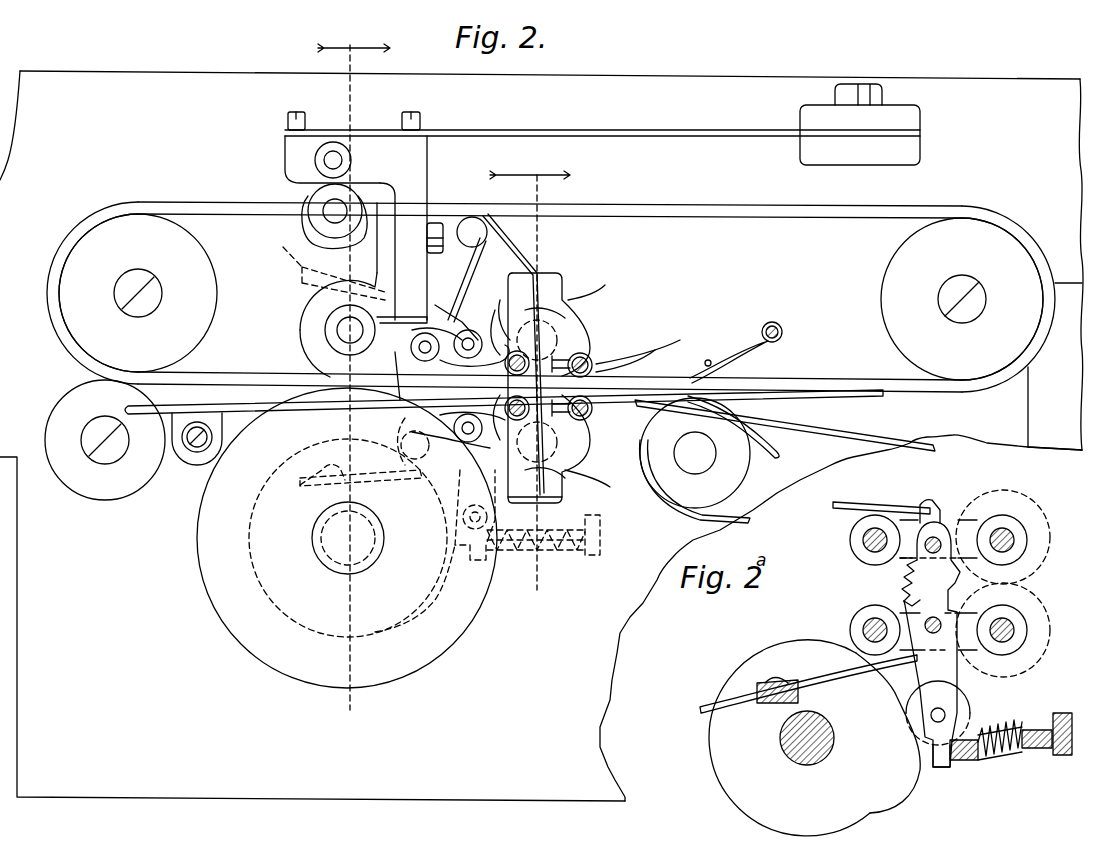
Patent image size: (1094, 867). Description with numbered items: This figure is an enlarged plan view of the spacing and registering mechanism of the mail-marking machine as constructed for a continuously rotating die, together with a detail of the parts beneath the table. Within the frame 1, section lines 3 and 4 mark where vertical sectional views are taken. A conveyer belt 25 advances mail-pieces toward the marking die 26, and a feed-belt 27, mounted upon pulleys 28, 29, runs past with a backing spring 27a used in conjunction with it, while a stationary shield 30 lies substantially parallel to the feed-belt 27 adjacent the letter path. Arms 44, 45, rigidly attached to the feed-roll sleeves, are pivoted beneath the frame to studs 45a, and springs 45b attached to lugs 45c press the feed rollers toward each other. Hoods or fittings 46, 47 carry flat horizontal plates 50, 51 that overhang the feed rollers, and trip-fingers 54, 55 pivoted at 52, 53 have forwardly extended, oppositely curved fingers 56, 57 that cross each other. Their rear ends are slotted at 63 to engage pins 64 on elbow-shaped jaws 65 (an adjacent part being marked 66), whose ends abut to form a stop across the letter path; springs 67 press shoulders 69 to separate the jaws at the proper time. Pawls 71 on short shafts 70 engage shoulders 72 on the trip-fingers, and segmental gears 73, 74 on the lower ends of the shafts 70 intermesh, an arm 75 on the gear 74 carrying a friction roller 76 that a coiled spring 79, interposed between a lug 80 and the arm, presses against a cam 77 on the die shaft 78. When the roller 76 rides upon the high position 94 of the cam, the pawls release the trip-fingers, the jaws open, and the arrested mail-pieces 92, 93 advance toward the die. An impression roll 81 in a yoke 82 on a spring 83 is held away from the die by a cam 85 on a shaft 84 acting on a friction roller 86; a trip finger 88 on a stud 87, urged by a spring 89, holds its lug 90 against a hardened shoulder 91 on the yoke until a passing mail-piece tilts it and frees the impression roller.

In FIG. 2, the frame 1 is at (686, 76).
In FIG. 2, the section line 3 is at (354, 365).
In FIG. 2, the section line 4 is at (530, 368).
In FIG. 2, the conveyer belt 25 is at (1060, 450).
In FIG. 2, the marking die 26 is at (462, 650).
In FIG. 2, the feed-belt 27 is at (703, 214).
In FIG. 2, the backing spring 27a is at (688, 370).
In FIG. 2, the pulley 28 is at (880, 308).
In FIG. 2, the pulley 29 is at (138, 293).
In FIG. 2, the stationary shield 30 is at (268, 410).
In FIG. 2A, the arm 44 is at (938, 510).
In FIG. 2A, the arm 45 is at (985, 665).
In FIG. 2A, the studs 45a is at (866, 625).
In FIG. 2, the springs 45b is at (361, 372).
In FIG. 2A, the springs 45b is at (822, 690).
In FIG. 2, the lugs 45c is at (301, 387).
In FIG. 2A, the lugs 45c is at (757, 700).
In FIG. 2, the hood or fitting 46 is at (550, 376).
In FIG. 2, the hood or fitting 47 is at (549, 505).
In FIG. 2, the flat horizontal plate 50 is at (560, 305).
In FIG. 2, the flat horizontal plate 51 is at (565, 472).
In FIG. 2, the pivot 52 is at (532, 360).
In FIG. 2, the pivot 53 is at (542, 442).
In FIG. 2, the trip-finger 54 is at (537, 334).
In FIG. 2, the trip-finger 55 is at (590, 420).
In FIG. 2, the curved finger 56 is at (460, 356).
In FIG. 2, the curved finger 57 is at (458, 422).
In FIG. 2, the slot 63 is at (594, 358).
In FIG. 2, the pin 64 is at (580, 352).
In FIG. 2, the jaw 65 is at (625, 363).
In FIG. 2, the guide finger 66 is at (638, 348).
In FIG. 2, the spring 67 is at (594, 386).
In FIG. 2, the shoulder 69 is at (491, 403).
In FIG. 2, the short shaft 70 is at (466, 330).
In FIG. 2A, the short shaft 70 is at (945, 535).
In FIG. 2, the pawl 71 is at (501, 354).
In FIG. 2, the shoulder 72 is at (466, 387).
In FIG. 2, the segmental gear 73 is at (397, 440).
In FIG. 2A, the segmental gear 73 is at (905, 565).
In FIG. 2, the segmental gear 74 is at (419, 445).
In FIG. 2A, the segmental gear 74 is at (905, 600).
In FIG. 2, the arm 75 is at (488, 585).
In FIG. 2A, the arm 75 is at (948, 700).
In FIG. 2A, the friction roller 76 is at (938, 768).
In FIG. 2, the cam 77 is at (372, 640).
In FIG. 2A, the cam 77 is at (720, 773).
In FIG. 2, the die shaft 78 is at (326, 565).
In FIG. 2A, the die shaft 78 is at (780, 735).
In FIG. 2, the coiled spring 79 is at (540, 558).
In FIG. 2A, the coiled spring 79 is at (1005, 757).
In FIG. 2, the lug 80 is at (600, 555).
In FIG. 2A, the lug 80 is at (1065, 755).
In FIG. 2, the impression roll 81 is at (300, 325).
In FIG. 2, the yoke 82 is at (410, 228).
In FIG. 2, the spring 83 is at (614, 133).
In FIG. 2, the shaft 84 is at (323, 218).
In FIG. 2, the cam 85 is at (322, 198).
In FIG. 2, the friction roller 86 is at (315, 158).
In FIG. 2, the stud 87 is at (410, 350).
In FIG. 2, the trip finger 88 is at (380, 380).
In FIG. 2, the spring 89 is at (476, 217).
In FIG. 2, the lug 90 is at (430, 318).
In FIG. 2, the shoulder 91 is at (435, 305).
In FIG. 2, the mail-piece 92 is at (840, 392).
In FIG. 2, the mail-piece 93 is at (860, 395).
In FIG. 2, the high position of cam 94 is at (415, 598).
In FIG. 2A, the high position of cam 94 is at (912, 800).